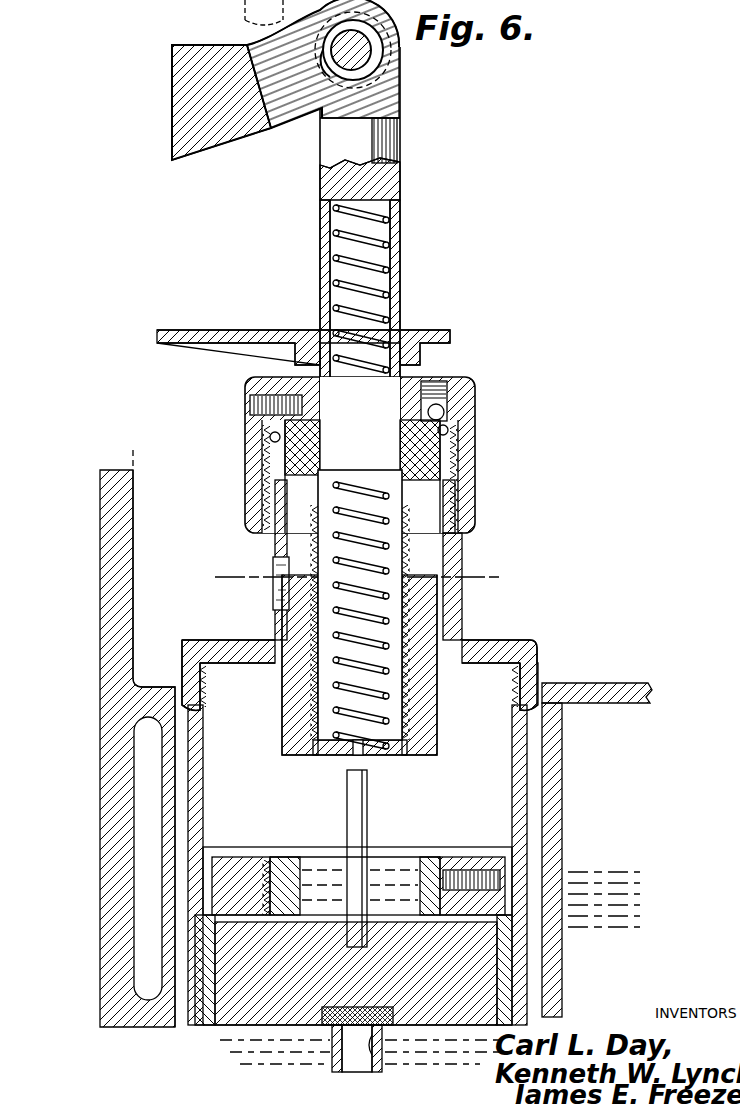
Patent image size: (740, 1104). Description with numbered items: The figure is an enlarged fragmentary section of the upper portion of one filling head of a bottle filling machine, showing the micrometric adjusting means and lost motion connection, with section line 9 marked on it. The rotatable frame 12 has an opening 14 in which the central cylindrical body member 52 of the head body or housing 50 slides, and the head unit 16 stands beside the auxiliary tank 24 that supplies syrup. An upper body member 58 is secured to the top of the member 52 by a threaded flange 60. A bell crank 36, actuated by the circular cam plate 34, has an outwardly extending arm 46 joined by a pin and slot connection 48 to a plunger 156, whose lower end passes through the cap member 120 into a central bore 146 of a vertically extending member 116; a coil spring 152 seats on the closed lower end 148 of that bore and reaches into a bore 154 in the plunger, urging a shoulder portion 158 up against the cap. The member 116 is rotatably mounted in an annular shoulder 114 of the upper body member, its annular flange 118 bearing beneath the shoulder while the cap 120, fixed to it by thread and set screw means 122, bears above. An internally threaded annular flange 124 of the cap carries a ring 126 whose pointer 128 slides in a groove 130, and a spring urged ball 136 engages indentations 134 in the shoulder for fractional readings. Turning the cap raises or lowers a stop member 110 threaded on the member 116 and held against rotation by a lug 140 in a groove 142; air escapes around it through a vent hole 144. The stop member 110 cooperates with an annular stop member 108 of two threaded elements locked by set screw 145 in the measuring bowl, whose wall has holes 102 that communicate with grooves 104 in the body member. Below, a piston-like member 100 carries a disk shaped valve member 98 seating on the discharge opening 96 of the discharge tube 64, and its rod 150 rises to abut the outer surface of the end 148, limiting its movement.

The section line 9- 9 is at (233, 560).
The frame 12 is at (133, 555).
The opening 14 is at (185, 775).
The valve unit 16 is at (250, 491).
The auxiliary tank 24 is at (600, 722).
The circular cam plate 34 is at (258, 12).
The bell crank 36 is at (168, 103).
The outwardly extending arm 46 is at (216, 118).
The pin and slot connection 48 is at (343, 68).
The body or housing 50 is at (522, 636).
The central cylindrical body member 52 is at (527, 808).
The upper body member 58 is at (450, 550).
The threaded flange 60 is at (532, 668).
The discharge tube 64 is at (337, 1060).
The discharge opening or port 96 is at (382, 1040).
The disk shaped valve member 98 is at (395, 1018).
The piston-like member 100 is at (470, 1010).
The holes 102 is at (232, 925).
The grooves 104 is at (200, 1030).
The annular stop member 108 is at (272, 855).
The stop member 110 is at (297, 748).
The annular shoulder 114 is at (443, 487).
The vertically extending member 116 is at (268, 548).
The annular flange 118 is at (450, 510).
The cap member 120 is at (255, 388).
The thread and set screw means 122 is at (256, 410).
The annular flange 124 is at (262, 455).
The ring 126 is at (258, 468).
The pointer 128 is at (460, 537).
The groove 130 is at (457, 620).
The indentations 134 is at (270, 436).
The spring urged ball 136 is at (447, 418).
The lug 140 is at (283, 596).
The groove 142 is at (282, 560).
The vent hole 144 is at (272, 503).
The set screw 145 is at (462, 870).
The bore 146 is at (318, 620).
The closed lower end 148 is at (338, 752).
The rod 150 is at (368, 820).
The coil spring 152 is at (380, 318).
The bore 154 is at (383, 288).
The plunger 156 is at (385, 180).
The shoulder portion 158 is at (424, 386).